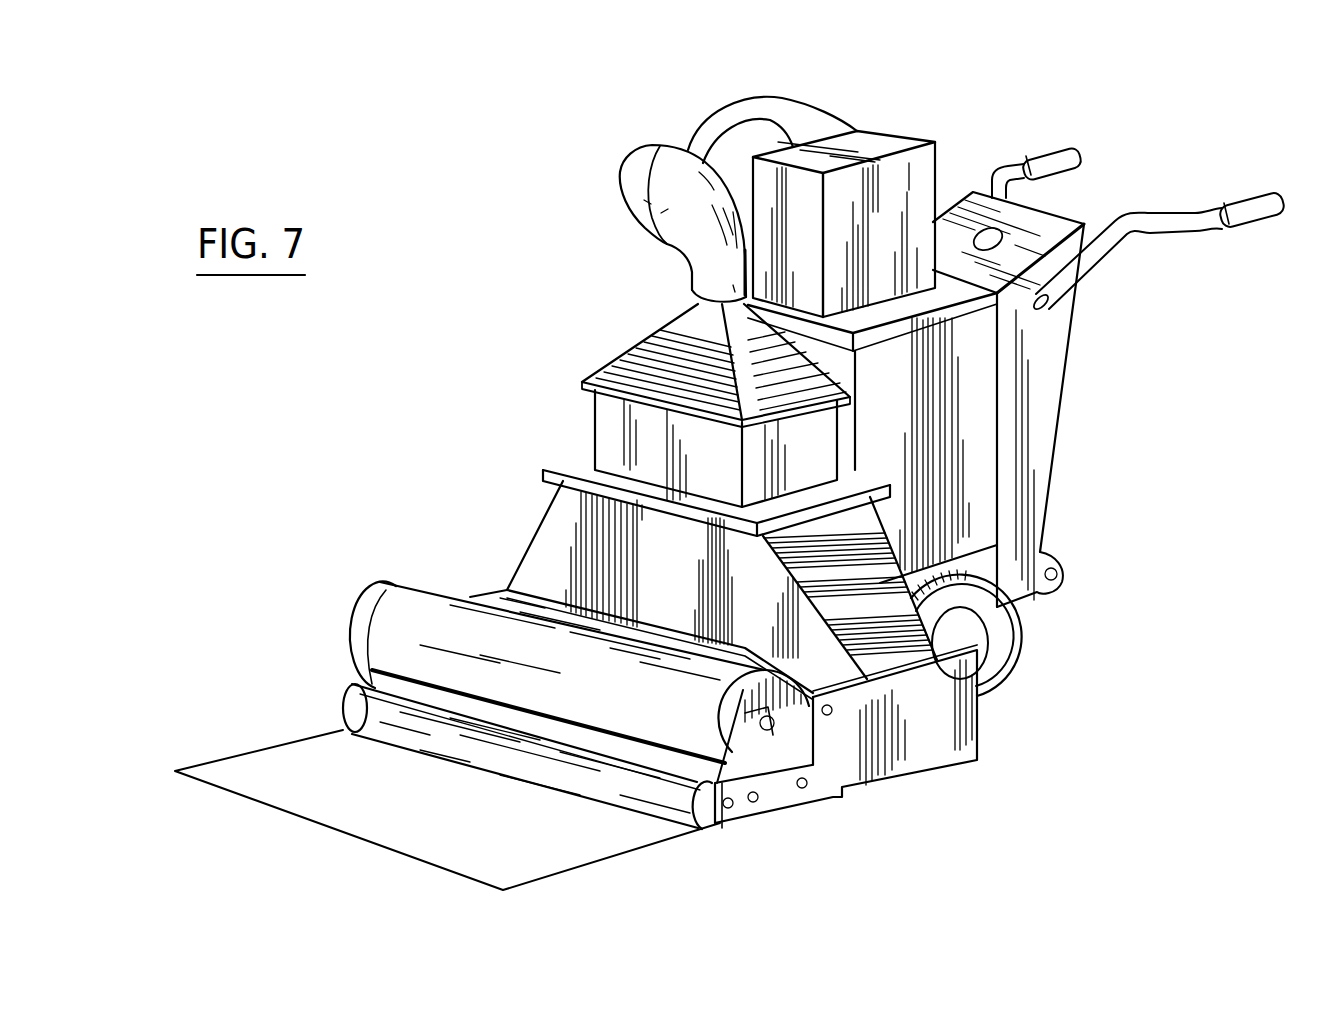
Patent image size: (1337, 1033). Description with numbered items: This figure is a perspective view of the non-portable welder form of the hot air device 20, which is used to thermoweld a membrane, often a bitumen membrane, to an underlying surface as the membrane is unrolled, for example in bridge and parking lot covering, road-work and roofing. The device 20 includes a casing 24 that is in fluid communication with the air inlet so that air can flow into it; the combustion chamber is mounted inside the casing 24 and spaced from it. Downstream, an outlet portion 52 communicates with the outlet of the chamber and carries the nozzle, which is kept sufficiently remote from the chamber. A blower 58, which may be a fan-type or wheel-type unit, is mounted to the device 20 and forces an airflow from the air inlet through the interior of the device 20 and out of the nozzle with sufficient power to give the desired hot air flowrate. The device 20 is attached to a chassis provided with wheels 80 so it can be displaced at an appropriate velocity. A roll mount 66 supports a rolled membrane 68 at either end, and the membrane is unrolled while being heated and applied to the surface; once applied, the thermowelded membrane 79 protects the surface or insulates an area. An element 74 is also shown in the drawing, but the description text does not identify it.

The device 20 is at (567, 185).
The casing 24 is at (597, 421).
The outlet portion 52 is at (552, 540).
The blower 58 is at (858, 115).
The roll mount 66 is at (932, 750).
The rolled membrane 68 is at (392, 607).
The front roller 74 is at (357, 702).
The thermowelded membrane 79 is at (313, 803).
The wheels 80 is at (1038, 654).